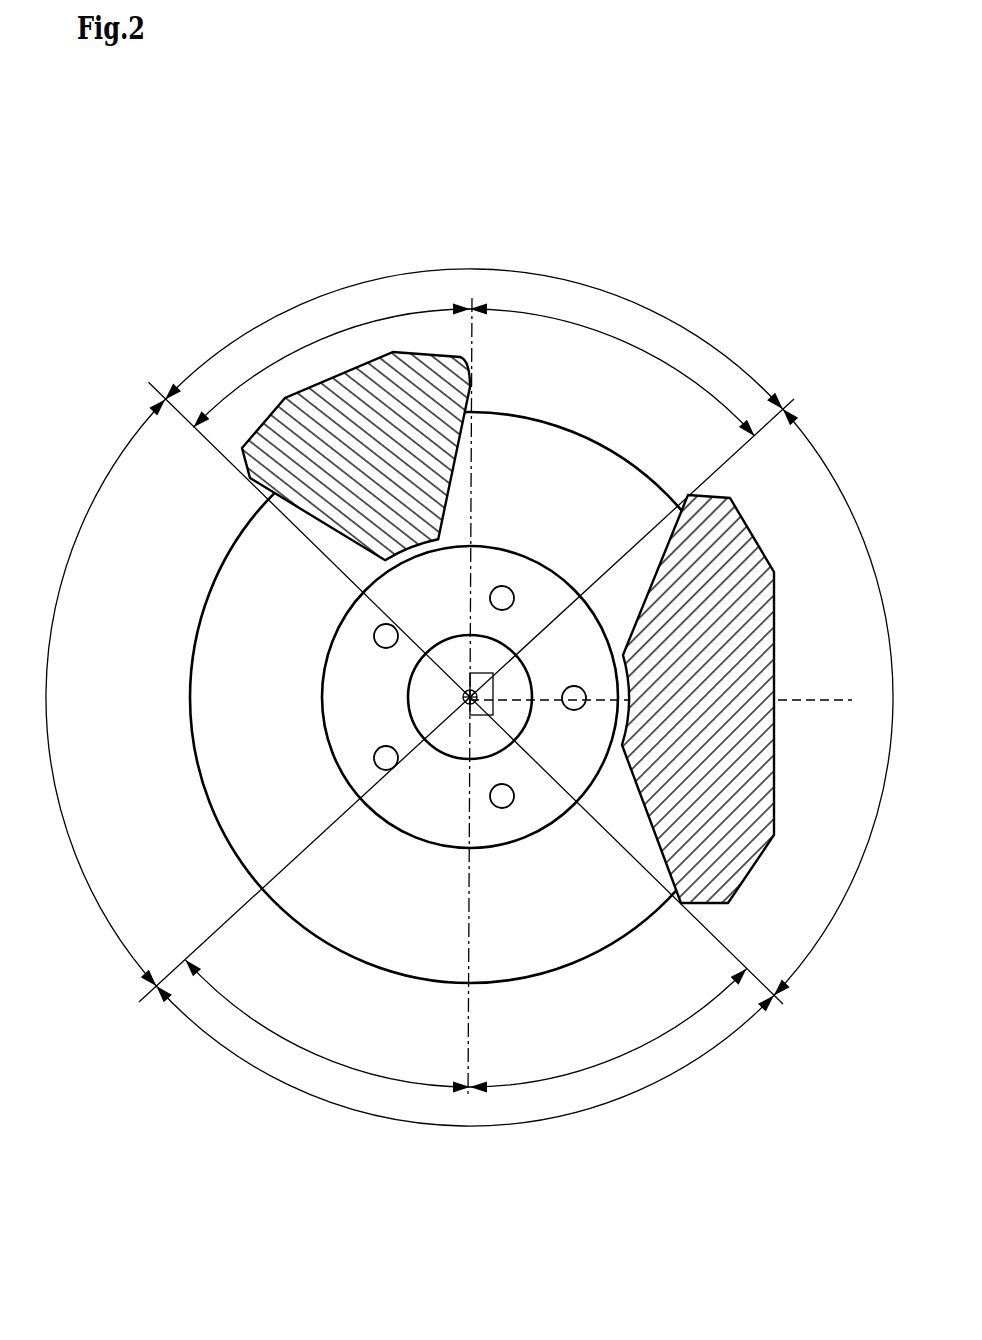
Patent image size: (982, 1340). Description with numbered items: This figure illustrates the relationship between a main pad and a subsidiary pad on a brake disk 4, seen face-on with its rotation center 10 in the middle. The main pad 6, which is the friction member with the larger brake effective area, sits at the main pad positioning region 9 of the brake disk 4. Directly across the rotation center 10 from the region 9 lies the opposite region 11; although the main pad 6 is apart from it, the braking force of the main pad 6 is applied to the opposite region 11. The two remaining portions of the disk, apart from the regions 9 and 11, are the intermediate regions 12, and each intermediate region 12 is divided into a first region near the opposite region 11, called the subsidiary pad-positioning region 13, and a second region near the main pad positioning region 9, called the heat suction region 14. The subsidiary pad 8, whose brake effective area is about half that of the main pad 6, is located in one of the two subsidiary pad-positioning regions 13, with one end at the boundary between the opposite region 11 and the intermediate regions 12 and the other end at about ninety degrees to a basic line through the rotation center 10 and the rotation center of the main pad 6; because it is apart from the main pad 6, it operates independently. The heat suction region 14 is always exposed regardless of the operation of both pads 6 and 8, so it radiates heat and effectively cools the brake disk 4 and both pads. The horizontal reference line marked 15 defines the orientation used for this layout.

The brake disk 4 is at (191, 680).
The main pad 6 is at (775, 605).
The subsidiary pad 8 is at (320, 387).
The main pad positioning region 9 is at (838, 483).
The rotation center 10 is at (463, 697).
The opposite region 11 is at (82, 523).
The intermediate regions 12 is at (585, 285).
The subsidiary pad-positioning region 13 is at (402, 317).
The heat suction region 14 is at (590, 335).
The horizontal center line 15 is at (822, 700).